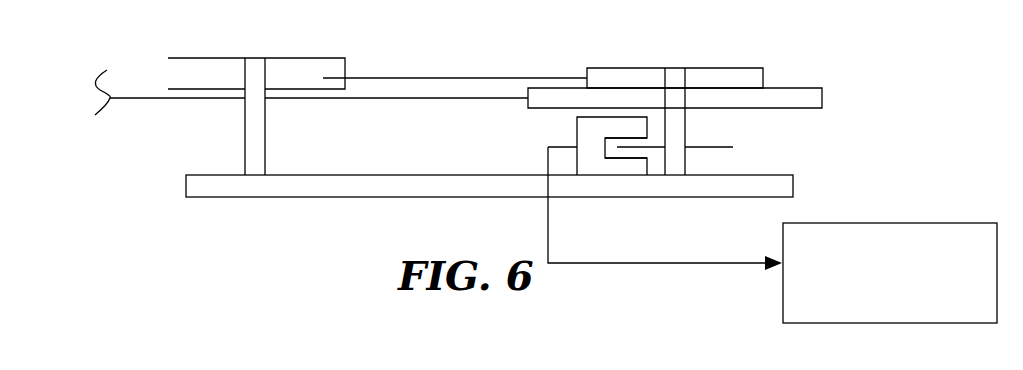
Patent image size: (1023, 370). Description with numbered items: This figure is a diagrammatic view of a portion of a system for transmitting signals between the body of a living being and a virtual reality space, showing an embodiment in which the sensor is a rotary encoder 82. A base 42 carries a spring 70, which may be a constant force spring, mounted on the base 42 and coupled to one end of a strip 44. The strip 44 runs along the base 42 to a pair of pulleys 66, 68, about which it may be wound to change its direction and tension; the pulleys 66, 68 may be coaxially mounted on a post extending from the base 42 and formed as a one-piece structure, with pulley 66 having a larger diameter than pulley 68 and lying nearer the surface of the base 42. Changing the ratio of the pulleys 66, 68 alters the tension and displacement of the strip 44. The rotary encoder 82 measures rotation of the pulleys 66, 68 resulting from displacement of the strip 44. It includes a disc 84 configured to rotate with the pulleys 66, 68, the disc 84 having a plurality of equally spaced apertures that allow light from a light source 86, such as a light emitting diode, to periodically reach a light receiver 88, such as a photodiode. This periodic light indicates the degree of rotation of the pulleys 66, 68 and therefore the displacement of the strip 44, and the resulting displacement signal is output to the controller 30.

The controller 30 is at (920, 240).
The base 42 is at (310, 187).
The strip 44 is at (132, 100).
The pulley 66 is at (800, 99).
The pulley 68 is at (752, 82).
The spring 70 is at (298, 74).
The rotary encoder 82 is at (548, 127).
The disc 84 is at (733, 147).
The light source 86 is at (632, 170).
The light receiver 88 is at (628, 125).